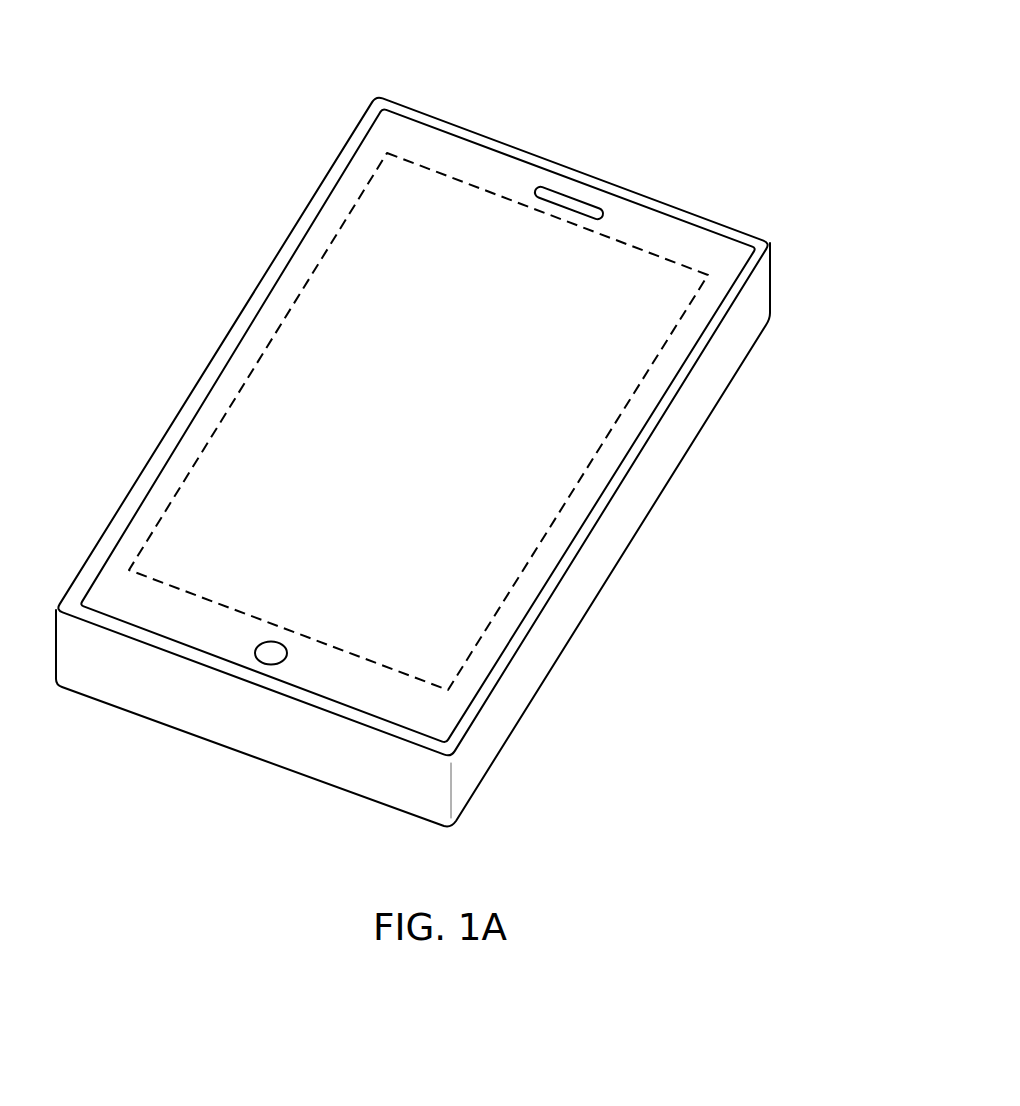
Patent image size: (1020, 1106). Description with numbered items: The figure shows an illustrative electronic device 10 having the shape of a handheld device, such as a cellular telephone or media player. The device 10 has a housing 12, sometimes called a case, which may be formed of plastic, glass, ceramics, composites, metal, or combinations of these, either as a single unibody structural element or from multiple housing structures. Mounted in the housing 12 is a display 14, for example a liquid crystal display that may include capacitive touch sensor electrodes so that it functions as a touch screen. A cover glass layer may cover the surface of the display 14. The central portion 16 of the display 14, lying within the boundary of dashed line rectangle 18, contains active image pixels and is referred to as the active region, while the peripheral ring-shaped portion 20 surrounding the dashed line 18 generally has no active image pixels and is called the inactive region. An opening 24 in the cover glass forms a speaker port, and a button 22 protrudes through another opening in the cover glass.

The electronic device 10 is at (775, 66).
The housing 12 is at (757, 302).
The display 14 is at (616, 277).
The active region 16 is at (270, 403).
The dashed line rectangle 18 is at (580, 481).
The inactive region 20 is at (557, 543).
The button 22 is at (272, 665).
The opening 24 is at (566, 196).